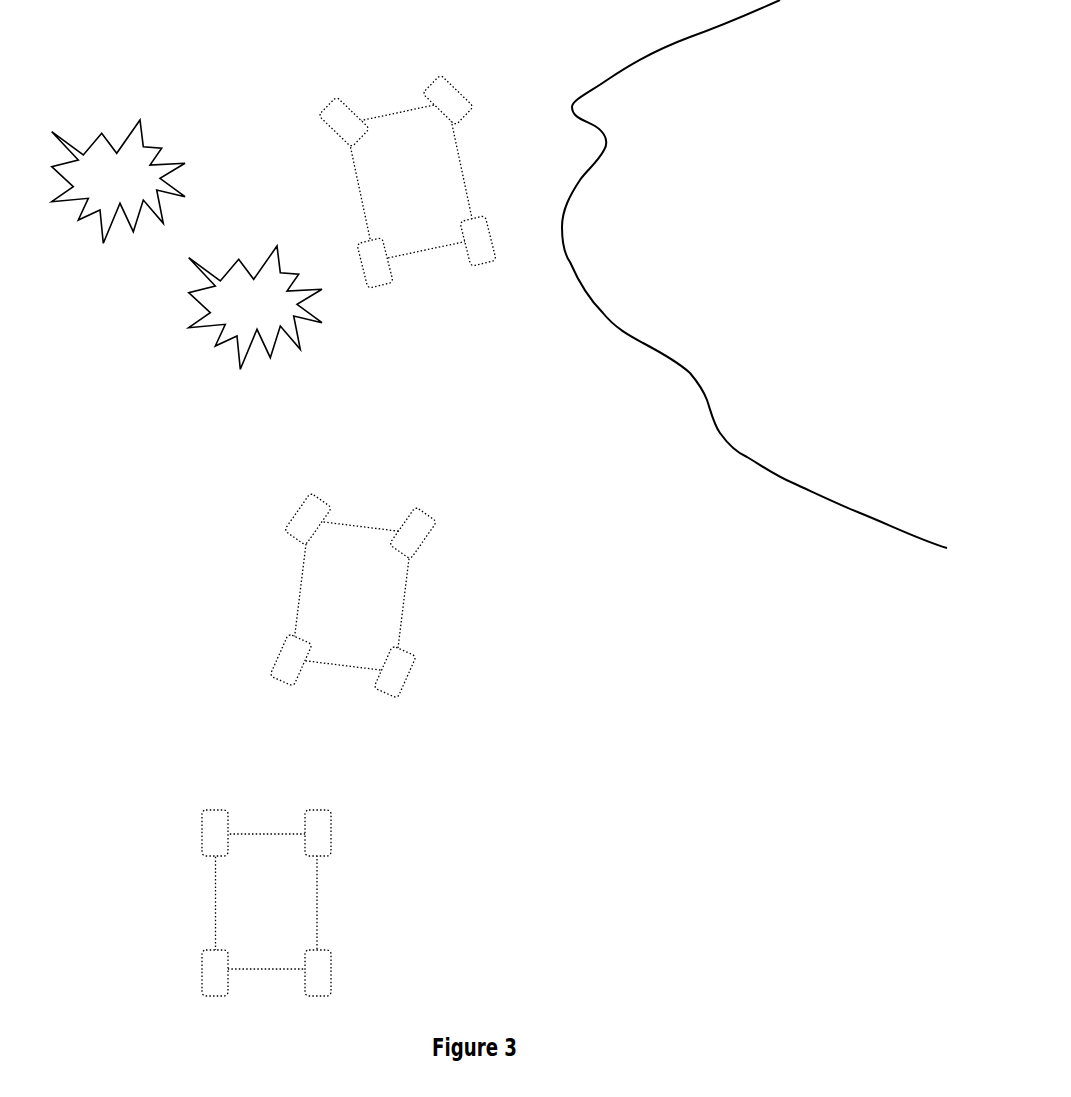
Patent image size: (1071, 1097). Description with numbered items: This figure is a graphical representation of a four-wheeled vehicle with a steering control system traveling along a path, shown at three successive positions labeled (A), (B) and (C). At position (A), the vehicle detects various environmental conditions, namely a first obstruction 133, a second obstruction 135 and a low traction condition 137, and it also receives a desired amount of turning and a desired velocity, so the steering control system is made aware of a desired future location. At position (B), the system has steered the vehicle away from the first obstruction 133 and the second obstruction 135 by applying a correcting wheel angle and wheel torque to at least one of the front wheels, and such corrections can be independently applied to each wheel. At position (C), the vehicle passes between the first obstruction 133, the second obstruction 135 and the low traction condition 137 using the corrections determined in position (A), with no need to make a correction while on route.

The first obstruction 133 is at (238, 350).
The second obstruction 135 is at (102, 227).
The low traction condition 137 is at (743, 230).